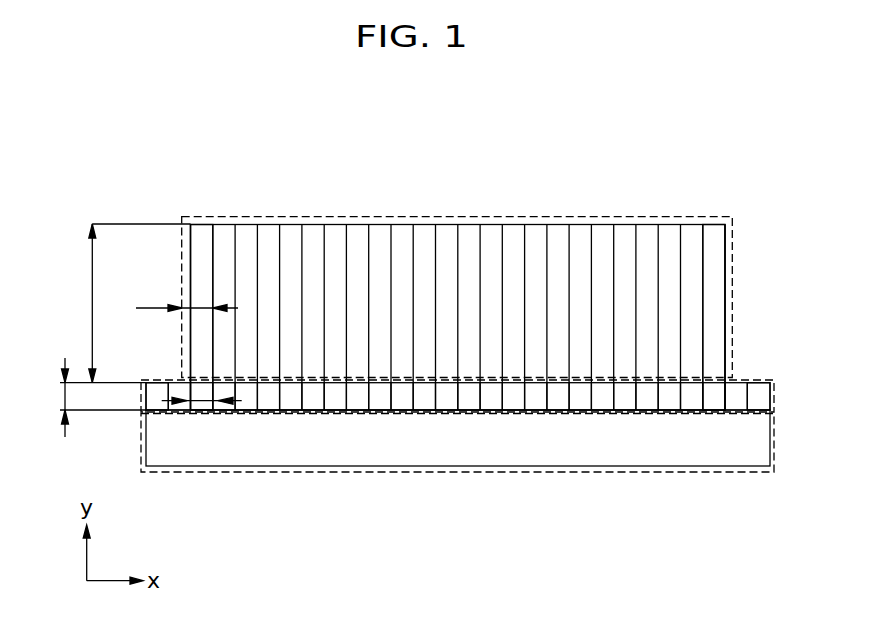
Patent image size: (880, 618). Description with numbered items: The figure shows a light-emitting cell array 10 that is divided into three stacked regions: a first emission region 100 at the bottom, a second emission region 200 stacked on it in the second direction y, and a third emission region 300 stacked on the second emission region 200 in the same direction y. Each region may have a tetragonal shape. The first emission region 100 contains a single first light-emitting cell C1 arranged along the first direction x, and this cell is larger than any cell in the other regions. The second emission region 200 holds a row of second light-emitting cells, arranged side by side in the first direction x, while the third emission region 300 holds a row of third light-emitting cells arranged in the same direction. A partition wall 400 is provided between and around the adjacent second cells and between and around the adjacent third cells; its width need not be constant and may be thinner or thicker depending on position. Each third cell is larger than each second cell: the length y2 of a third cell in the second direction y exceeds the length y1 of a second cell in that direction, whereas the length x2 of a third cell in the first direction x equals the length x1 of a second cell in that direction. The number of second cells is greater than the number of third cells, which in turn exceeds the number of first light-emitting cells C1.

The light-emitting cell array 10 is at (121, 139).
The first emission region 100 is at (489, 468).
The second emission region 200 is at (487, 432).
The third emission region 300 is at (732, 297).
The partition wall 400 is at (439, 243).
The first light-emitting cell C1 is at (424, 455).
The length of second light-emitting cell in first direction x1 is at (204, 397).
The length of third light-emitting cell in first direction x2 is at (187, 296).
The length of second light-emitting cell in second direction y1 is at (92, 397).
The length of third light-emitting cell in second direction y2 is at (125, 303).